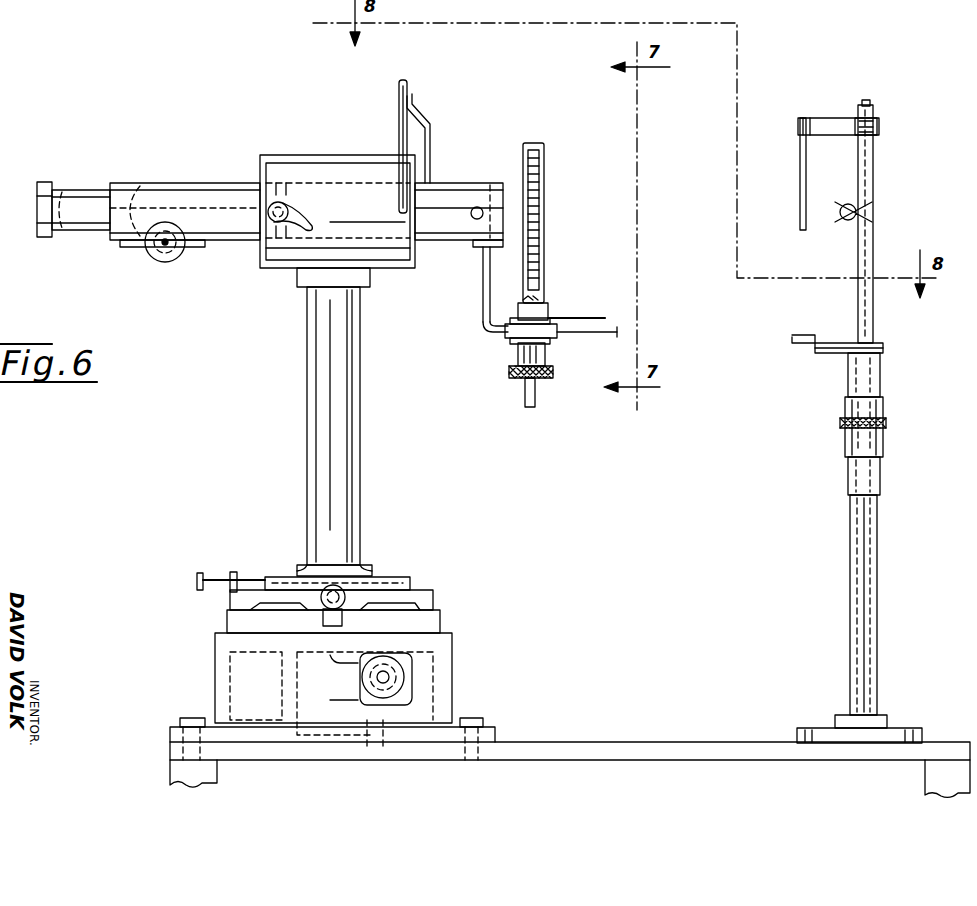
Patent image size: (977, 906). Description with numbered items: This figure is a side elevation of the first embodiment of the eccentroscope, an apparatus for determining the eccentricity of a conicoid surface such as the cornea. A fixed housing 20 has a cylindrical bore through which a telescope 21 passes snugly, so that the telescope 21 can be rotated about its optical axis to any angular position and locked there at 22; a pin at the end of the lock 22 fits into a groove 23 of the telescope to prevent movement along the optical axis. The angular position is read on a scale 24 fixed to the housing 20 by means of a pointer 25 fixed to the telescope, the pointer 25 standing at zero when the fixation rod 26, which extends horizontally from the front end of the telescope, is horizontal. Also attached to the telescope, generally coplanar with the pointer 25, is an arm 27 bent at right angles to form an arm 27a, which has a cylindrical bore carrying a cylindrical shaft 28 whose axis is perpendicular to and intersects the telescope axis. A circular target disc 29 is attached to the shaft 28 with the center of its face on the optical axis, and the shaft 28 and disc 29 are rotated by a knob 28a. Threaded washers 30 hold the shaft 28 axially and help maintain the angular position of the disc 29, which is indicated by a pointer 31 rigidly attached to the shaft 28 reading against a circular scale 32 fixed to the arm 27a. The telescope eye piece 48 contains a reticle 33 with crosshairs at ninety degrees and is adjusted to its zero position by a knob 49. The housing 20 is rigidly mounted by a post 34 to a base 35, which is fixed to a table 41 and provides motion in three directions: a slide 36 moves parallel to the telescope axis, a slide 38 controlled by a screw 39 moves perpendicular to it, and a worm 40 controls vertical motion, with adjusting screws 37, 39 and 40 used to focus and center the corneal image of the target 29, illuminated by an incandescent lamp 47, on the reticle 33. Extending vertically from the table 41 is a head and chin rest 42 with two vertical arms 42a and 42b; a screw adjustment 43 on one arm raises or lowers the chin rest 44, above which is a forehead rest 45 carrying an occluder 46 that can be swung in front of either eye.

The fixed housing 20 is at (337, 155).
The telescope 21 is at (196, 182).
The lock 22 is at (288, 206).
The groove 23 is at (281, 183).
The scale 24 is at (399, 95).
The pointer 25 is at (412, 100).
The fixation rod 26 is at (474, 218).
The arm 27 is at (482, 292).
The arm 27a is at (506, 336).
The cylindrical shaft 28 is at (546, 356).
The knob 28a is at (537, 385).
The circular disc 29 is at (545, 232).
The threaded washers 30 is at (508, 318).
The pointer 31 is at (580, 318).
The circular scale 32 is at (612, 337).
The reticle 33 is at (140, 186).
The post 34 is at (361, 398).
The base 35 is at (466, 648).
The slide 36 is at (392, 580).
The adjusting screw 37 is at (197, 581).
The slide 38 is at (433, 600).
The screw 39 is at (345, 600).
The worm 40 is at (395, 679).
The table 41 is at (613, 742).
The head and chin rest 42 is at (890, 346).
The vertical arm 42a is at (876, 183).
The vertical arm 42b is at (876, 156).
The screw adjustment 43 is at (887, 423).
The chin rest 44 is at (822, 354).
The forehead rest 45 is at (806, 118).
The occluder 46 is at (800, 160).
The incandescent lamp 47 is at (538, 300).
The telescope eye piece 48 is at (68, 190).
The knob 49 is at (180, 256).